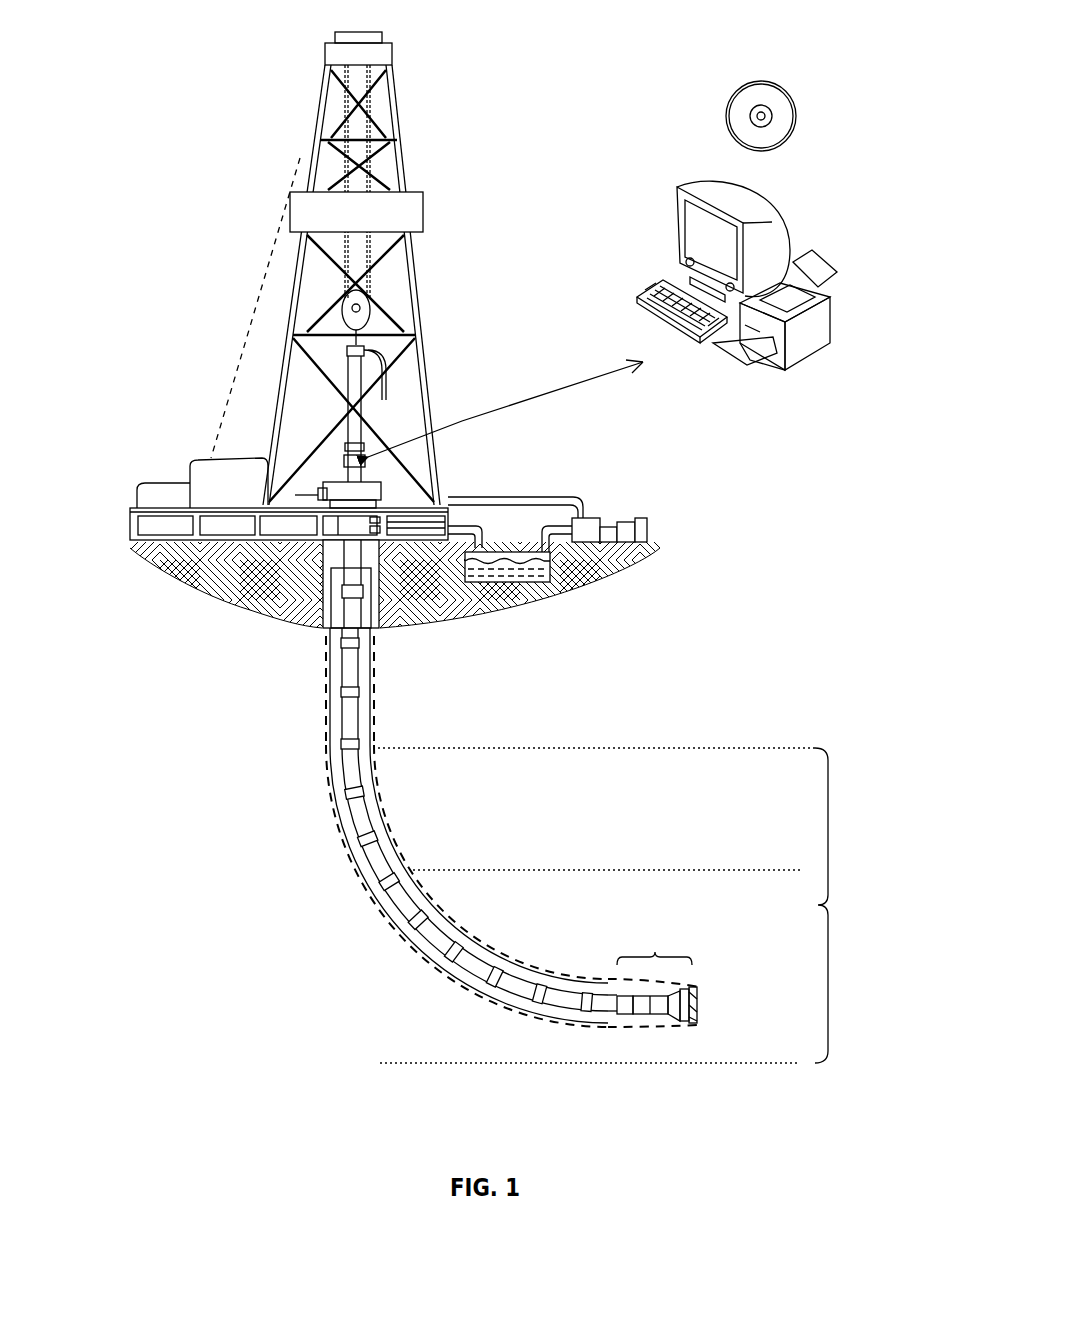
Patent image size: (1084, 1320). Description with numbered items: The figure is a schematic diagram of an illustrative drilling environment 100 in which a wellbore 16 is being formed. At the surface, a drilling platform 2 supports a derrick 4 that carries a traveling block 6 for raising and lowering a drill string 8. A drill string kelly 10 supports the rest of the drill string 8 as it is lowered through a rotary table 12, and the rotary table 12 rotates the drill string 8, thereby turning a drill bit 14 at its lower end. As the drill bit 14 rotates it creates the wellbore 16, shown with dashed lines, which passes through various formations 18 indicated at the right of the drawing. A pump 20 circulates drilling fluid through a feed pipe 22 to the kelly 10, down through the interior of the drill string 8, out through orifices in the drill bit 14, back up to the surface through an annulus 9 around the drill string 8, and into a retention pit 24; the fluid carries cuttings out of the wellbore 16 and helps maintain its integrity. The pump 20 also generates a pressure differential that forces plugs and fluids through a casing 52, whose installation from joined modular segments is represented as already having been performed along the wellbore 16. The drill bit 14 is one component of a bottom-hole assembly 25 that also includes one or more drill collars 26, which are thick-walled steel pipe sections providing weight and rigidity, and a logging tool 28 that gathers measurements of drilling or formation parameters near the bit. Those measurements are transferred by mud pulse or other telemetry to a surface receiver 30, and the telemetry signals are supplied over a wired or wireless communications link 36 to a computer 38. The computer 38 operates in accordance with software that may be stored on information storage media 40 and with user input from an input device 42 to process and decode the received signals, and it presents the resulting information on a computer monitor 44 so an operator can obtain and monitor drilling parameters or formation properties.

The drilling environment 100 is at (245, 118).
The drilling platform 2 is at (128, 522).
The derrick 4 is at (404, 136).
The traveling block 6 is at (378, 303).
The drill string 8 is at (360, 672).
The annulus 9 is at (340, 712).
The drill string kelly 10 is at (345, 345).
The rotary table 12 is at (335, 482).
The drill bit 14 is at (688, 1025).
The wellbore 16 is at (325, 779).
The formations 18 is at (508, 802).
The pump 20 is at (590, 517).
The feed pipe 22 is at (505, 497).
The retention pit 24 is at (493, 560).
The bottom-hole assembly 25 is at (654, 940).
The drill collars 26 is at (642, 1016).
The logging tool 28 is at (626, 1014).
The surface receiver 30 is at (372, 447).
The communications link 36 is at (505, 404).
The computer 38 is at (680, 178).
The information storage media 40 is at (738, 80).
The input device 42 is at (687, 352).
The computer monitor 44 is at (673, 228).
The casing 52 is at (332, 812).